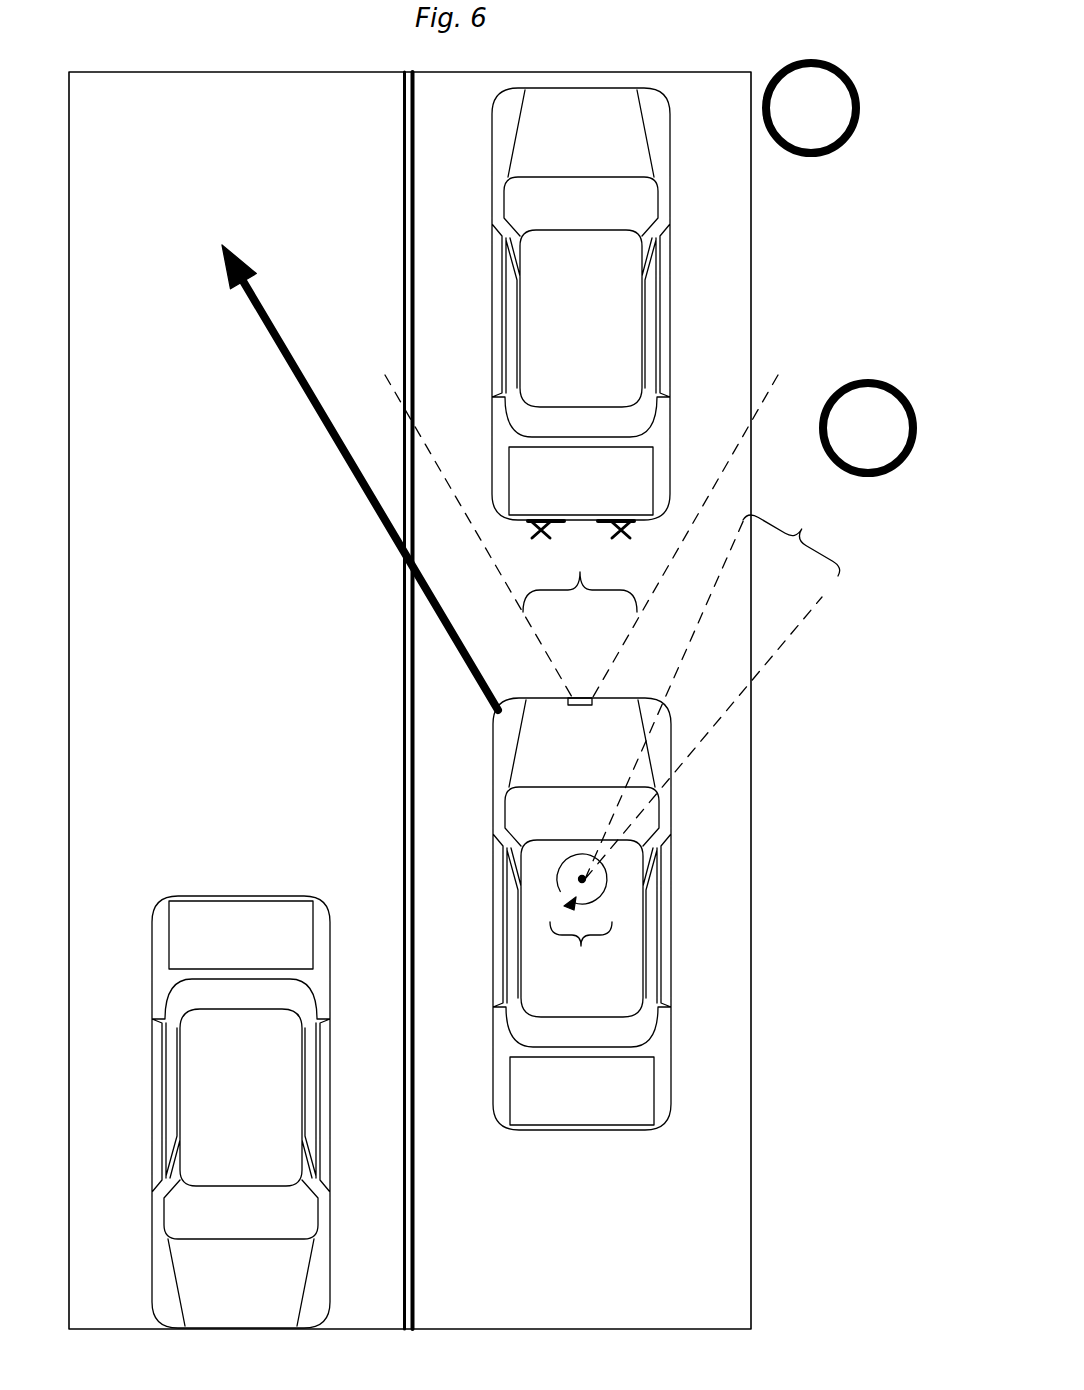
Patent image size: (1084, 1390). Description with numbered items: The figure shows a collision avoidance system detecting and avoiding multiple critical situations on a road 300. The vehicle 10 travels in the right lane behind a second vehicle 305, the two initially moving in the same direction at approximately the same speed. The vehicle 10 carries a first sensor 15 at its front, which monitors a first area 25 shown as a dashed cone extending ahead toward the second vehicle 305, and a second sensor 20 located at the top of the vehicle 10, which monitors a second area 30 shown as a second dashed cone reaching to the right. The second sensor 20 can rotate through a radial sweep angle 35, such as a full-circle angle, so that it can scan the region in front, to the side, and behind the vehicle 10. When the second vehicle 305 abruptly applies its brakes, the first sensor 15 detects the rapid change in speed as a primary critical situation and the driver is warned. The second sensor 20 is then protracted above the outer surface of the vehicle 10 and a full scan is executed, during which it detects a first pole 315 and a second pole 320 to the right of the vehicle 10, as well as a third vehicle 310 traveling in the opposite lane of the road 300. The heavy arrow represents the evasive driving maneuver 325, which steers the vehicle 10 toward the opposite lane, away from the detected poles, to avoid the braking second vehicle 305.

The vehicle 10 is at (585, 1133).
The first sensor 15 is at (581, 706).
The second sensor 20 is at (585, 881).
The first area 25 is at (581, 536).
The second area 30 is at (712, 684).
The radial sweep angle 35 is at (581, 918).
The road 300 is at (225, 71).
The second vehicle 305 is at (488, 304).
The third vehicle 310 is at (222, 890).
The first pole 315 is at (898, 462).
The second pole 320 is at (838, 142).
The evasive driving maneuver 325 is at (328, 442).